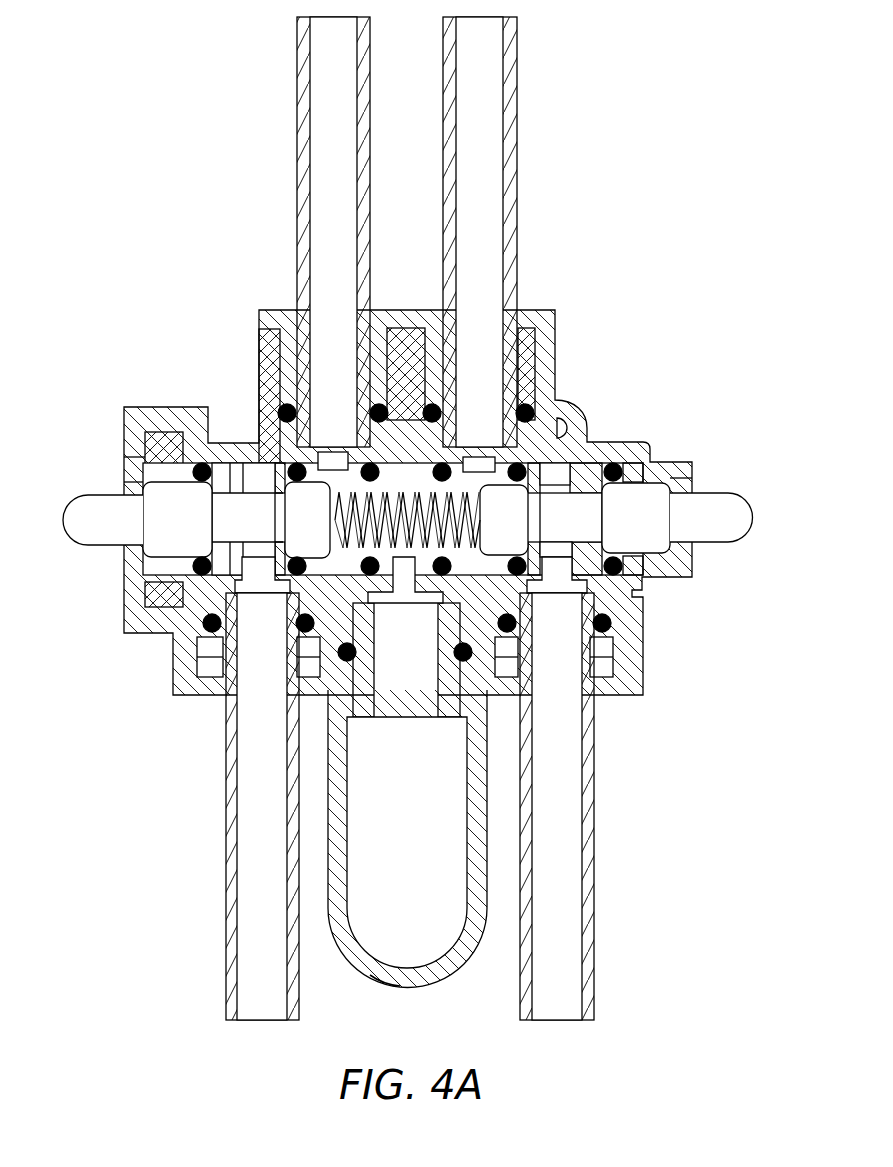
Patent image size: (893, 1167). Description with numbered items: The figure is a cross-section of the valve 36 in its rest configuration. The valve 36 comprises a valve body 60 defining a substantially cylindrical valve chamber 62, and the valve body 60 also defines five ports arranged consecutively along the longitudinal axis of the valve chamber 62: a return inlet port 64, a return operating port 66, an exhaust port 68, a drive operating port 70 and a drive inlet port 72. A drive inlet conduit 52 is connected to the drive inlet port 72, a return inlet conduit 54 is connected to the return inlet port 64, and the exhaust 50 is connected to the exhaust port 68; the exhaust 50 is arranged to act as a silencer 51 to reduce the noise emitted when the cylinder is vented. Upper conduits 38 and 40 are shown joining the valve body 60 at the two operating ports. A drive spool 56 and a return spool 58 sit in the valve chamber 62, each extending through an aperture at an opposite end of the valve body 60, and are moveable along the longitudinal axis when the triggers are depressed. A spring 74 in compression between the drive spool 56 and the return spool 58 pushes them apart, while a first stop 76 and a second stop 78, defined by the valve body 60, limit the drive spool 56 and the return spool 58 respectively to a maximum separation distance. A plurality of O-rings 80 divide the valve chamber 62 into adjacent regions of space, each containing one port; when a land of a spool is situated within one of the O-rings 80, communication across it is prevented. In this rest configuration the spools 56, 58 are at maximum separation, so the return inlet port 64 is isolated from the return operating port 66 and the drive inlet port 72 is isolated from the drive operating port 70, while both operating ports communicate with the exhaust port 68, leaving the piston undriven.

The valve 36 is at (684, 424).
The first upper conduit 38 is at (323, 160).
The second upper conduit 40 is at (485, 165).
The exhaust 50 is at (410, 985).
The silencer 51 is at (382, 982).
The drive inlet conduit 52 is at (565, 837).
The return inlet conduit 54 is at (253, 838).
The drive spool 56 is at (752, 520).
The return spool 58 is at (63, 520).
The valve body 60 is at (233, 450).
The valve chamber 62 is at (598, 550).
The return inlet port 64 is at (258, 577).
The return operating port 66 is at (333, 463).
The exhaust port 68 is at (405, 572).
The drive operating port 70 is at (478, 465).
The drive inlet port 72 is at (555, 577).
The spring 74 is at (483, 519).
The first stop 76 is at (690, 478).
The second stop 78 is at (128, 482).
The O-rings 80 is at (622, 553).